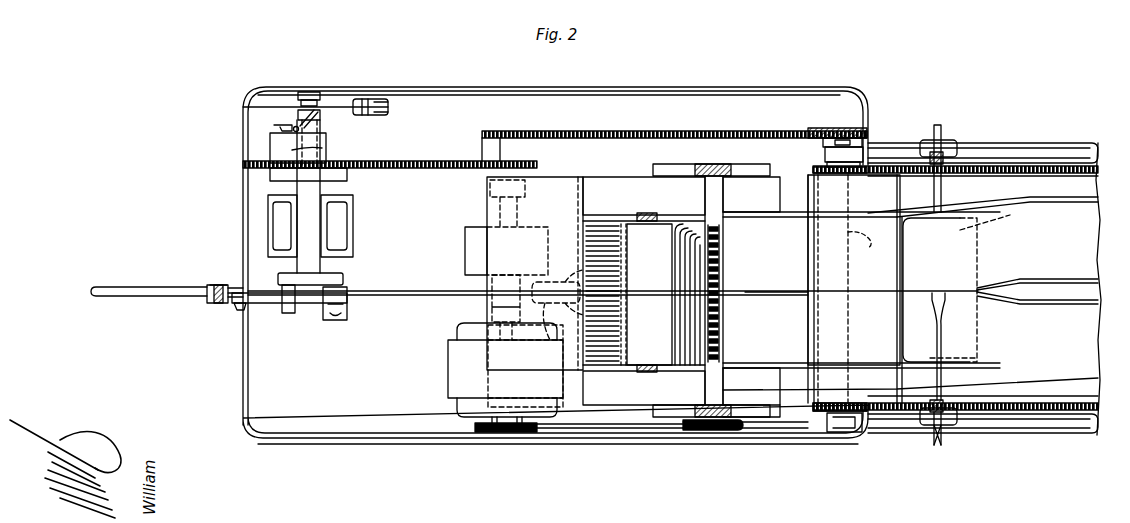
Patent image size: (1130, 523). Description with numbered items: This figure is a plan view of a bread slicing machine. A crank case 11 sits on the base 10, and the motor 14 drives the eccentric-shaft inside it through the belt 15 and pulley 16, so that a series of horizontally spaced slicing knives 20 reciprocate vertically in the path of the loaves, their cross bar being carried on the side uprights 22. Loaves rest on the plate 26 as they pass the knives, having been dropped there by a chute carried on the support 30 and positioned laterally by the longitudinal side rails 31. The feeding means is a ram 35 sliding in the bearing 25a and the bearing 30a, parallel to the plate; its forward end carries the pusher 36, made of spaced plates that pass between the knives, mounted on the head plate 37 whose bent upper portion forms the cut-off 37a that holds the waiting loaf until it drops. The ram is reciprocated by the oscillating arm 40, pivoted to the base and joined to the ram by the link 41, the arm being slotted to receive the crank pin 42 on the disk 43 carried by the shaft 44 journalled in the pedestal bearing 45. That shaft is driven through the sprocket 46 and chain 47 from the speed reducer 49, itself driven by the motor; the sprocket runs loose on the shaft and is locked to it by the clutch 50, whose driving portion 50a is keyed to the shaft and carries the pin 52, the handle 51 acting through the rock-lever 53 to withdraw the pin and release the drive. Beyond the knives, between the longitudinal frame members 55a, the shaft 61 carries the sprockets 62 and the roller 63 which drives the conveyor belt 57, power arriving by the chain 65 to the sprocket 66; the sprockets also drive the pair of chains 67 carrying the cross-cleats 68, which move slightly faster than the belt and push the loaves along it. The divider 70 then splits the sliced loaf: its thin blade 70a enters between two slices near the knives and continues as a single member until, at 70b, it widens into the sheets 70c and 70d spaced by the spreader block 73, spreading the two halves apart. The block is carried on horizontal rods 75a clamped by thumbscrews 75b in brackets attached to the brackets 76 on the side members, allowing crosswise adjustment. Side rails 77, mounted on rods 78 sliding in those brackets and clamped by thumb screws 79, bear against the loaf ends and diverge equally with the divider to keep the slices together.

The base 10 is at (295, 423).
The crank case 11 is at (762, 417).
The motor 14 is at (458, 372).
The belt 15 is at (596, 428).
The pulley 16 is at (716, 430).
The slicing knives 20 is at (722, 250).
The side uprights 22 is at (712, 163).
The bearing 25a is at (535, 338).
The plate 26 is at (620, 192).
The support 30 is at (228, 287).
The bearing 30a is at (215, 304).
The longitudinal side rails 31 is at (647, 212).
The ram 35 is at (415, 294).
The pusher 36 is at (614, 218).
The head plate 37 is at (579, 174).
The cut-off 37a is at (488, 210).
The oscillating arm 40 is at (267, 305).
The link 41 is at (317, 303).
The crank pin 42 is at (291, 314).
The disk 43 is at (340, 281).
The shaft 44 is at (308, 226).
The pedestal bearing 45 is at (325, 236).
The sprocket 46 is at (354, 176).
The chain 47 is at (446, 162).
The speed reducer 49 is at (466, 252).
The clutch 50 is at (260, 151).
The clutch driving portion 50a is at (322, 148).
The handle 51 is at (268, 106).
The pin 52 is at (276, 125).
The rock-lever 53 is at (322, 126).
The longitudinal frame members 55a is at (1010, 150).
The belt 57 is at (1040, 190).
The shaft 61 is at (860, 130).
The sprockets 62 is at (820, 162).
The roller 63 is at (858, 235).
The chain 65 is at (642, 131).
The sprocket 66 is at (838, 128).
The chains 67 is at (888, 164).
The cross-cleats 68 is at (897, 316).
The divider 70 is at (924, 288).
The blade 70a is at (756, 290).
The junction 70b is at (982, 288).
The sheet 70c is at (1046, 305).
The sheet 70d is at (1060, 279).
The spreader block 73 is at (1075, 291).
The horizontal rods 75a is at (958, 356).
The thumbscrews 75b is at (934, 426).
The brackets 76 is at (950, 142).
The side rails 77 is at (780, 210).
The rods 78 is at (942, 125).
The thumb screws 79 is at (946, 158).